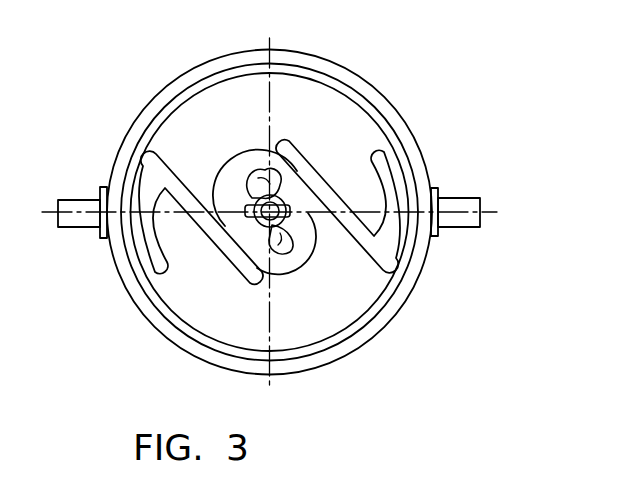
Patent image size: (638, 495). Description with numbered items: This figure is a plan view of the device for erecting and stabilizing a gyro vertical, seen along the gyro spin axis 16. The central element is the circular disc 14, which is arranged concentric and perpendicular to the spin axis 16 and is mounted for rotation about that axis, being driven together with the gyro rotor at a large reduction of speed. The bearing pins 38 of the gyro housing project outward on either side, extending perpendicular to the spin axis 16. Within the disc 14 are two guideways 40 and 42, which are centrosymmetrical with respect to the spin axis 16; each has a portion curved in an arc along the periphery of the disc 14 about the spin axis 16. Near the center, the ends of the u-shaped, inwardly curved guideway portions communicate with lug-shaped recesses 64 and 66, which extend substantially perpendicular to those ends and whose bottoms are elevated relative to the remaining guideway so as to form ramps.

The disc 14 is at (363, 92).
The spin axis 16 is at (283, 180).
The bearing pins 38 is at (93, 227).
The guideway 40 is at (178, 163).
The guideway 42 is at (316, 188).
The lug-shaped recess 64 is at (290, 255).
The lug-shaped recess 66 is at (260, 166).